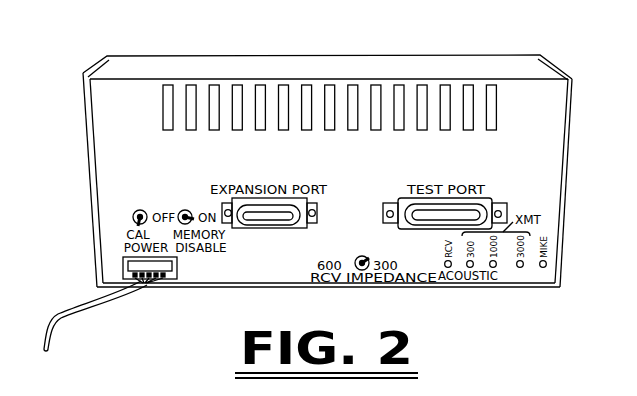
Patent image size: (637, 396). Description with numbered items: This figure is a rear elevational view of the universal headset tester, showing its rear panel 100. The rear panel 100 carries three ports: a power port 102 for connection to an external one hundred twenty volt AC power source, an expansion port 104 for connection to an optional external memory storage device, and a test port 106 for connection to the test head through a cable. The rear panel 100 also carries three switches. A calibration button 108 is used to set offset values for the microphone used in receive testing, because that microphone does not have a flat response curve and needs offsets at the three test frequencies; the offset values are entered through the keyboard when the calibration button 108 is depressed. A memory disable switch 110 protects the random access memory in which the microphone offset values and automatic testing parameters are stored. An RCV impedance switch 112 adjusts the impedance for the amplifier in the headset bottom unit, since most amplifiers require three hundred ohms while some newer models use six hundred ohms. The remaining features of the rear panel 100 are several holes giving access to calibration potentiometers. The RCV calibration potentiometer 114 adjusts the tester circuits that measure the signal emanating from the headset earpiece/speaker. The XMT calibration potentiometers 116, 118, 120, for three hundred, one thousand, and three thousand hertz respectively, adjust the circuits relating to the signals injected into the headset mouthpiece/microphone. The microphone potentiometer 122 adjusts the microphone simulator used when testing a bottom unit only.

The rear panel 100 is at (328, 158).
The power port 102 is at (178, 268).
The expansion port 104 is at (272, 228).
The test port 106 is at (398, 200).
The calibration button 108 is at (143, 209).
The memory disable switch 110 is at (185, 209).
The RCV impedance switch 112 is at (362, 256).
The RCV calibration potentiometer 114 is at (446, 266).
The XMT calibration potentiometer 116 is at (470, 268).
The XMT calibration potentiometer 118 is at (496, 266).
The XMT calibration potentiometer 120 is at (522, 267).
The microphone potentiometer 122 is at (547, 264).